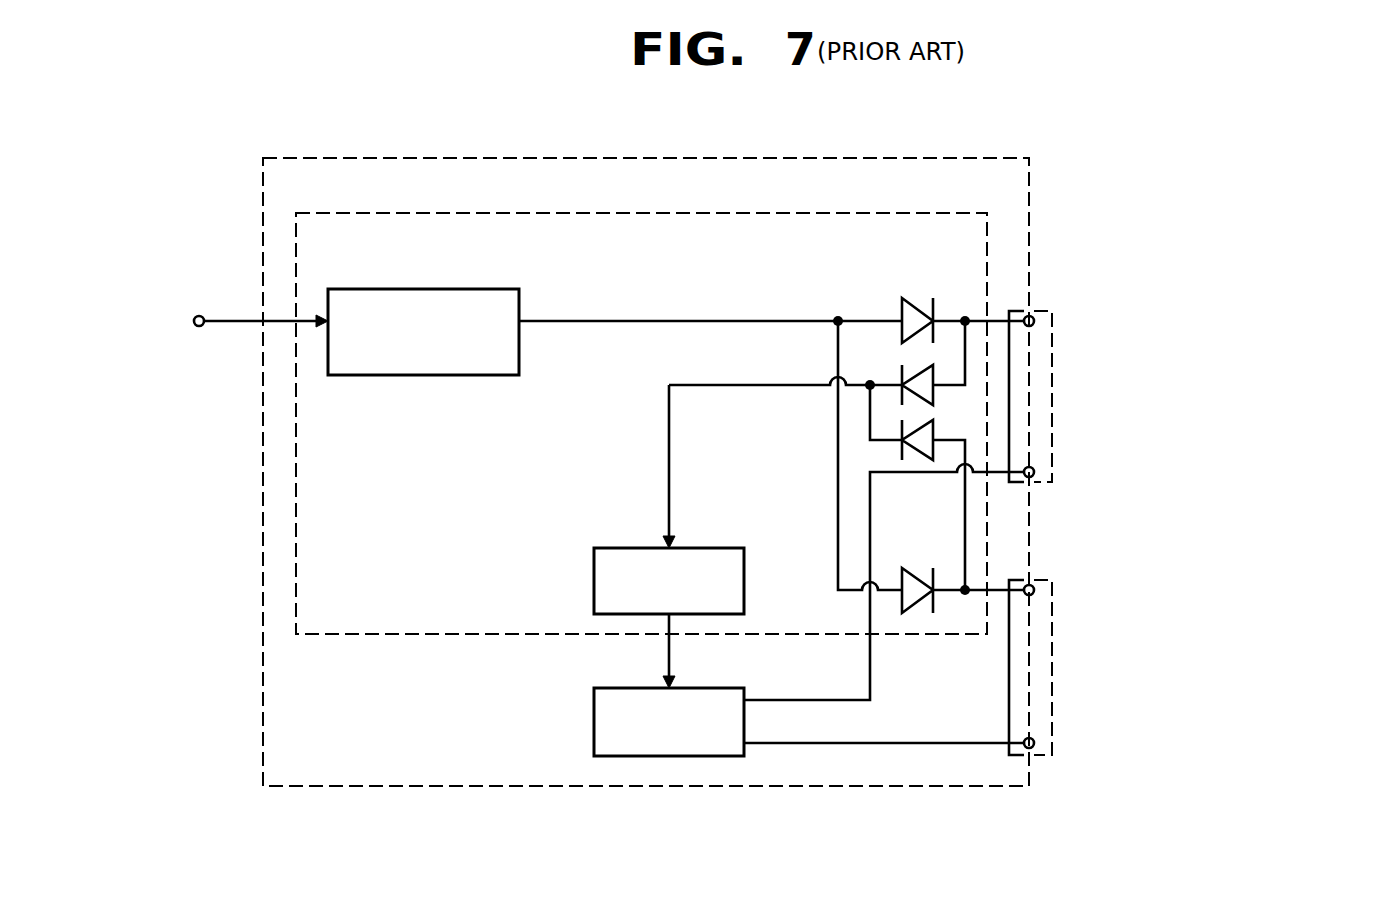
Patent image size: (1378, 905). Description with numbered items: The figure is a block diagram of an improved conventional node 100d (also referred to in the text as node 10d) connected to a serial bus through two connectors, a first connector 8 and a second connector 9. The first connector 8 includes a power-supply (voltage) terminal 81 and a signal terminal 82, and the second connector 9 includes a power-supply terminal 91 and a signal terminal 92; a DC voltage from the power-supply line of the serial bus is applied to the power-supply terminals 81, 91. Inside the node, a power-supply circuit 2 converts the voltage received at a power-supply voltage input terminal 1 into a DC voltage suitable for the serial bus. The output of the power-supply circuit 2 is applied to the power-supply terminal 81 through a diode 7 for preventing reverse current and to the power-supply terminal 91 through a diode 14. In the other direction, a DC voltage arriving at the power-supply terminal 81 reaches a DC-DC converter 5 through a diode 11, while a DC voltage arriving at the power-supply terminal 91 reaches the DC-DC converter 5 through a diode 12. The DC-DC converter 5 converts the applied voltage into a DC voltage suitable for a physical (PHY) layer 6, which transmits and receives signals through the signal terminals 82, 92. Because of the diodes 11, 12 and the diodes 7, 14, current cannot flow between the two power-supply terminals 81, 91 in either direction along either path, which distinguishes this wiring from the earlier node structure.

The node 100d is at (373, 157).
The node 10d is at (603, 212).
The power-supply voltage input terminal 1 is at (195, 326).
The power-supply circuit 2 is at (487, 288).
The DC-DC converter 5 is at (712, 547).
The physical layer 6 is at (594, 706).
The diode 7 is at (905, 298).
The diode 11 is at (930, 366).
The diode 12 is at (935, 421).
The diode 14 is at (905, 568).
The connector 8 is at (1053, 384).
The power-supply terminal 81 is at (1034, 315).
The signal terminal 82 is at (1034, 466).
The connector 9 is at (1053, 654).
The power-supply terminal 91 is at (1034, 584).
The signal terminal 92 is at (1034, 737).